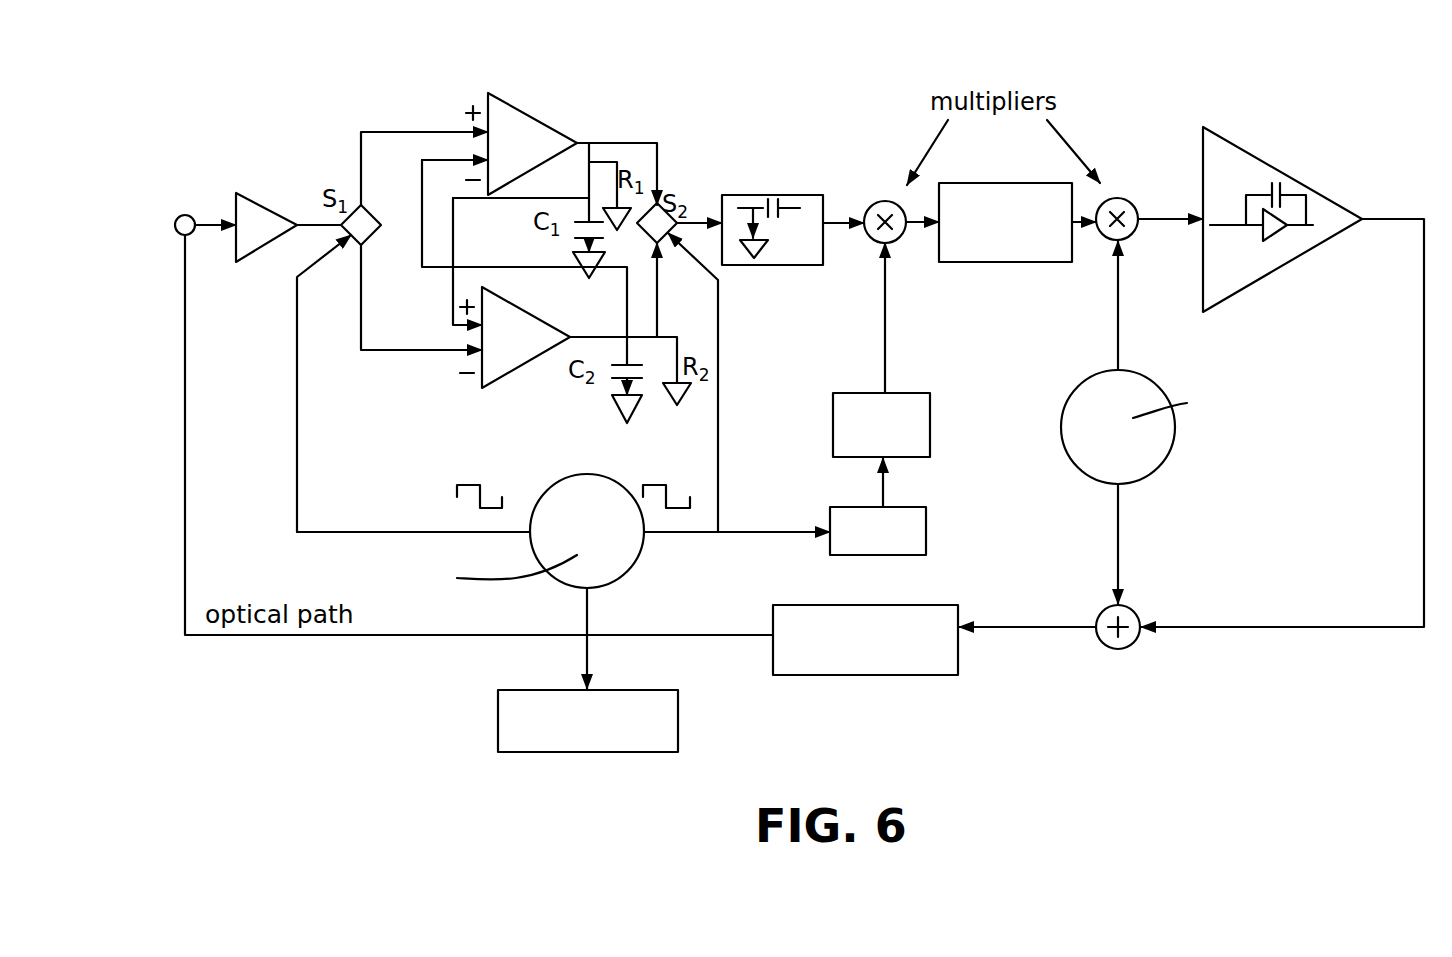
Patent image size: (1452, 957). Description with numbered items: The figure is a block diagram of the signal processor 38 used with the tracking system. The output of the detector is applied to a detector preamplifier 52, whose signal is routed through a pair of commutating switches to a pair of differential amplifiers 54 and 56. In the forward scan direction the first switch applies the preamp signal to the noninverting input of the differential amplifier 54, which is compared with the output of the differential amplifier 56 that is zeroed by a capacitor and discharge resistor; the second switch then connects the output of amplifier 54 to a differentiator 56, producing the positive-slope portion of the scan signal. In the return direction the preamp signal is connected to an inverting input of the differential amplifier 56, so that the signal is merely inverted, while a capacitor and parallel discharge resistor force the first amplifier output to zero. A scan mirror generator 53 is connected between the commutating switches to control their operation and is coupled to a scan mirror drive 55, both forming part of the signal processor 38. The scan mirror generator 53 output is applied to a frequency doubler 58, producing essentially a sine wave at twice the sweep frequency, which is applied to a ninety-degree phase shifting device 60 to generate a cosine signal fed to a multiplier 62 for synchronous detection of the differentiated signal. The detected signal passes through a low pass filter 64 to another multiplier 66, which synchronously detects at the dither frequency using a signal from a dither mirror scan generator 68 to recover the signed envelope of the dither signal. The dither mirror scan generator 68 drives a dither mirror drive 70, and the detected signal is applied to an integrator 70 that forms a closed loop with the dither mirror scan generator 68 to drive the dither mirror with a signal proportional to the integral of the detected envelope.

The signal processor 38 is at (1366, 98).
The detector preamplifier 52 is at (261, 240).
The scan mirror generator 53 is at (627, 573).
The differential amplifier 54 is at (552, 135).
The scan mirror drive 55 is at (498, 727).
The differential amplifier 56 is at (507, 365).
The frequency doubler 58 is at (926, 530).
The 90° phase shifting device 60 is at (923, 422).
The multiplier 62 is at (869, 240).
The low pass filter 64 is at (1005, 262).
The multiplier 66 is at (1122, 196).
The dither mirror scan generator 68 is at (1153, 458).
The dither mirror drive 70 is at (1232, 138).